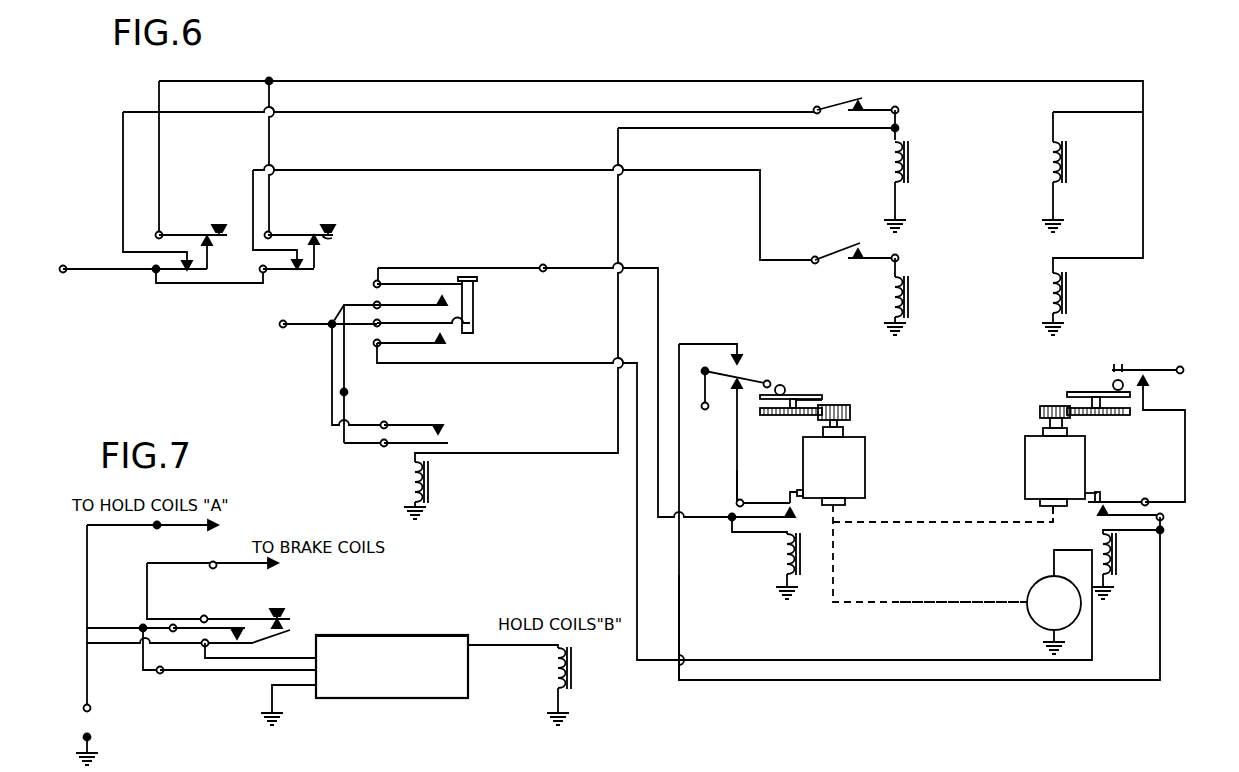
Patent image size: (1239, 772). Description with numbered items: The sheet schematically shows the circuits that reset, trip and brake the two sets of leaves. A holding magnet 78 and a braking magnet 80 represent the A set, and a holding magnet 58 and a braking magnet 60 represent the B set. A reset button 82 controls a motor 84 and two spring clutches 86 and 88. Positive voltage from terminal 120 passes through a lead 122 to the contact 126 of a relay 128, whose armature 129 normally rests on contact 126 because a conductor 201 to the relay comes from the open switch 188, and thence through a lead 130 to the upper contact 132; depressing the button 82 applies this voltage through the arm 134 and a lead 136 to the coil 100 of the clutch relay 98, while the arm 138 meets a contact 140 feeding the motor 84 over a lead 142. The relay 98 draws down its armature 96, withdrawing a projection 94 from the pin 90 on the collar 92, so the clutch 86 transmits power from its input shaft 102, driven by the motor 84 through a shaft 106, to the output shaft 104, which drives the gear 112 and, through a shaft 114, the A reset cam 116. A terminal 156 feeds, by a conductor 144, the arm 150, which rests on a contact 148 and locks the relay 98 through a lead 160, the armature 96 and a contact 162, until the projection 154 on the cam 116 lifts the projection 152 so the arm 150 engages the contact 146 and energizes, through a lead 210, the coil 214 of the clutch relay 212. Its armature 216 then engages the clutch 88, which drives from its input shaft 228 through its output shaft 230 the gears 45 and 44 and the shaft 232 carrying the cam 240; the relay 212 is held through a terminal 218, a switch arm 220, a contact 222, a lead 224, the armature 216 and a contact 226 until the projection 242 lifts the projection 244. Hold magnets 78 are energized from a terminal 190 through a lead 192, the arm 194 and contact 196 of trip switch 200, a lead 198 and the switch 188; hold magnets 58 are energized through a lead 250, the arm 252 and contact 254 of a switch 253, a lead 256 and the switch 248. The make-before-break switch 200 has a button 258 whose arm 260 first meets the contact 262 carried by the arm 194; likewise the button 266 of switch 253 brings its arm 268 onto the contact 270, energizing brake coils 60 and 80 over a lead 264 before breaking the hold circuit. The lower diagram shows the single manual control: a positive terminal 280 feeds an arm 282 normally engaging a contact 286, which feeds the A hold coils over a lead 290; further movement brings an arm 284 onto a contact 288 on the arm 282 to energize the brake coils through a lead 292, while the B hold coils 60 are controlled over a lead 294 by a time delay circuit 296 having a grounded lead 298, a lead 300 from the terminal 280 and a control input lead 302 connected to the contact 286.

In FIG. 6, the lead 264 is at (414, 80).
In FIG. 6, the lead 198 is at (123, 172).
In FIG. 6, the contact 196 is at (175, 263).
In FIG. 6, the lead 256 is at (416, 170).
In FIG. 6, the conductor 201 is at (618, 234).
In FIG. 6, the switch 188 is at (862, 98).
In FIG. 6, the holding magnet 78 is at (882, 168).
In FIG. 6, the braking magnet 80 is at (1048, 168).
In FIG. 6, the switch 248 is at (856, 252).
In FIG. 6, the holding magnet 58 is at (882, 295).
In FIG. 6, the braking magnet 60 is at (1048, 295).
In FIG. 7, the braking magnet 60 is at (562, 662).
In FIG. 6, the trip switch 200 is at (192, 218).
In FIG. 6, the switch arm 260 is at (177, 229).
In FIG. 6, the manually operable button 258 is at (212, 223).
In FIG. 6, the contact 262 is at (210, 241).
In FIG. 6, the positive current supply terminal 190 is at (64, 273).
In FIG. 6, the lead 192 is at (108, 273).
In FIG. 6, the arm 194 is at (174, 282).
In FIG. 6, the lead 250 is at (220, 283).
In FIG. 6, the arm 252 is at (285, 272).
In FIG. 6, the contact 254 is at (312, 268).
In FIG. 6, the contact 270 is at (326, 247).
In FIG. 6, the trip switch 253 is at (296, 229).
In FIG. 6, the control button 266 is at (334, 224).
In FIG. 6, the switch arm 268 is at (332, 236).
In FIG. 6, the arm 134 is at (438, 278).
In FIG. 6, the lead 136 is at (542, 267).
In FIG. 6, the reset button 82 is at (480, 286).
In FIG. 6, the upper contact 132 is at (415, 298).
In FIG. 6, the switch arm 138 is at (474, 325).
In FIG. 6, the contact 140 is at (448, 344).
In FIG. 6, the lead 142 is at (564, 363).
In FIG. 6, the positive terminal 120 is at (287, 322).
In FIG. 6, the lead 122 is at (298, 324).
In FIG. 6, the lead 130 is at (350, 392).
In FIG. 6, the contact 126 is at (449, 420).
In FIG. 6, the armature 129 is at (453, 441).
In FIG. 6, the relay 128 is at (436, 465).
In FIG. 6, the conductor 144 is at (919, 496).
In FIG. 6, the contact 146 is at (742, 360).
In FIG. 6, the arm 150 is at (747, 382).
In FIG. 6, the projection 152 is at (778, 384).
In FIG. 6, the projection 154 is at (791, 395).
In FIG. 6, the gear 112 is at (762, 417).
In FIG. 6, the A reset cam 116 is at (798, 396).
In FIG. 6, the shaft 114 is at (806, 398).
In FIG. 6, the output shaft 104 is at (846, 426).
In FIG. 6, the clutch 86 is at (862, 434).
In FIG. 6, the rotatable collar 92 is at (860, 457).
In FIG. 6, the positive voltage terminal 156 is at (694, 416).
In FIG. 6, the contact 148 is at (732, 390).
In FIG. 6, the lead 160 is at (734, 466).
In FIG. 6, the armature 96 is at (750, 497).
In FIG. 6, the projection 94 is at (790, 488).
In FIG. 6, the pin 90 is at (796, 487).
In FIG. 6, the contact 162 is at (797, 514).
In FIG. 6, the input shaft 102 is at (840, 510).
In FIG. 6, the clutch relay 98 is at (770, 548).
In FIG. 6, the coil 100 is at (787, 564).
In FIG. 6, the lead 210 is at (683, 571).
In FIG. 6, the positive terminal 218 is at (1193, 366).
In FIG. 6, the switch arm 220 is at (1160, 358).
In FIG. 6, the projection 244 is at (1122, 362).
In FIG. 6, the projection 242 is at (1116, 380).
In FIG. 6, the cam 240 is at (1078, 390).
In FIG. 6, the shaft 232 is at (1085, 390).
In FIG. 6, the gear 44 is at (1117, 418).
In FIG. 6, the gear 45 is at (1038, 408).
In FIG. 6, the output shaft 230 is at (1045, 430).
In FIG. 6, the clutch 88 is at (1069, 463).
In FIG. 6, the armature 216 is at (1116, 500).
In FIG. 6, the lead 224 is at (1185, 435).
In FIG. 6, the contact 222 is at (1150, 386).
In FIG. 6, the contact 226 is at (1149, 520).
In FIG. 6, the coil 214 is at (1102, 548).
In FIG. 6, the clutch relay 212 is at (1122, 548).
In FIG. 6, the input shaft 228 is at (985, 522).
In FIG. 6, the shaft 106 is at (923, 602).
In FIG. 6, the motor 84 is at (1035, 620).
In FIG. 7, the lead 290 is at (156, 526).
In FIG. 7, the lead 292 is at (216, 564).
In FIG. 7, the arm 284 is at (230, 616).
In FIG. 7, the contact 288 is at (285, 626).
In FIG. 7, the contact 286 is at (225, 648).
In FIG. 7, the arm 282 is at (260, 652).
In FIG. 7, the control input lead 302 is at (150, 673).
In FIG. 7, the positive terminal 280 is at (95, 710).
In FIG. 7, the time delay circuit 296 is at (355, 700).
In FIG. 7, the lead 300 is at (307, 654).
In FIG. 7, the grounded lead 298 is at (295, 698).
In FIG. 7, the lead 294 is at (495, 649).